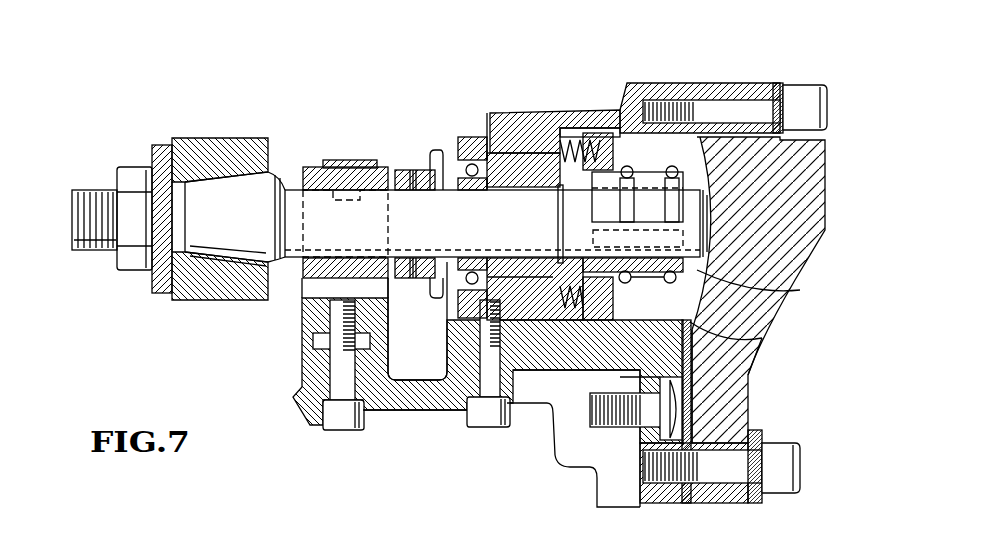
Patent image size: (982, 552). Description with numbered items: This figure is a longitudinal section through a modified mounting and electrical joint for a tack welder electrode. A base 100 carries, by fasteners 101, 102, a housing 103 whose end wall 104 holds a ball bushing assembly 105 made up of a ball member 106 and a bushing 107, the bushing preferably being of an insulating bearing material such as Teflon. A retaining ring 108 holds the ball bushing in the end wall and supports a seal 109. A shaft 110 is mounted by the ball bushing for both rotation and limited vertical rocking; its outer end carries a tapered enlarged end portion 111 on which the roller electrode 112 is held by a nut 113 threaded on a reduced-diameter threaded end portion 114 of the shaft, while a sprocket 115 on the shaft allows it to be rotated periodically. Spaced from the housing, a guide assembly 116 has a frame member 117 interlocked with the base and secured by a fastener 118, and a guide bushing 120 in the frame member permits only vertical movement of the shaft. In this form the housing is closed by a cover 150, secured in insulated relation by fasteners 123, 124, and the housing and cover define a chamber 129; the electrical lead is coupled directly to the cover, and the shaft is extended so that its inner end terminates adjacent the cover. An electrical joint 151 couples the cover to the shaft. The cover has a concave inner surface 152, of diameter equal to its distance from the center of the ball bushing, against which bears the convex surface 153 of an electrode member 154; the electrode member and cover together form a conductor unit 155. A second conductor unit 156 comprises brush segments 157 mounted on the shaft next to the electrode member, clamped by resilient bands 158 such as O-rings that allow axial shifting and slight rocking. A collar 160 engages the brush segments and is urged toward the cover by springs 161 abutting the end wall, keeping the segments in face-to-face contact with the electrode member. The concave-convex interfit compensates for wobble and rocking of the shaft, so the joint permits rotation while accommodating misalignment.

The base 100 is at (400, 411).
The fastener 101 is at (478, 422).
The fastener 102 is at (590, 432).
The housing 103 is at (562, 120).
The end wall 104 is at (535, 120).
The ball bushing assembly 105 is at (500, 297).
The ball member 106 is at (510, 150).
The bushing 107 is at (488, 135).
The retaining ring 108 is at (458, 140).
The seal 109 is at (440, 155).
The shaft 110 is at (280, 178).
The enlarged end portion 111 is at (212, 231).
The electrode 112 is at (265, 140).
The nut 113 is at (133, 170).
The threaded stud 114 is at (90, 255).
The sprocket 115 is at (415, 170).
The guide assembly 116 is at (290, 313).
The frame member 117 is at (315, 336).
The fastener 118 is at (325, 428).
The guide bushing 120 is at (352, 162).
The fastener 123 is at (793, 452).
The fastener 124 is at (800, 90).
The chamber 129 is at (648, 322).
The cover 150 is at (790, 292).
The electrical joint 151 is at (635, 120).
The inner surface 152 is at (760, 343).
The convex surface 153 is at (720, 120).
The electrode member 154 is at (796, 280).
The conductor unit 155 is at (687, 327).
The conductor unit 156 is at (703, 300).
The brush segments 157 is at (595, 200).
The resilient bands 158 is at (640, 170).
The collar 160 is at (583, 318).
The springs 161 is at (580, 140).